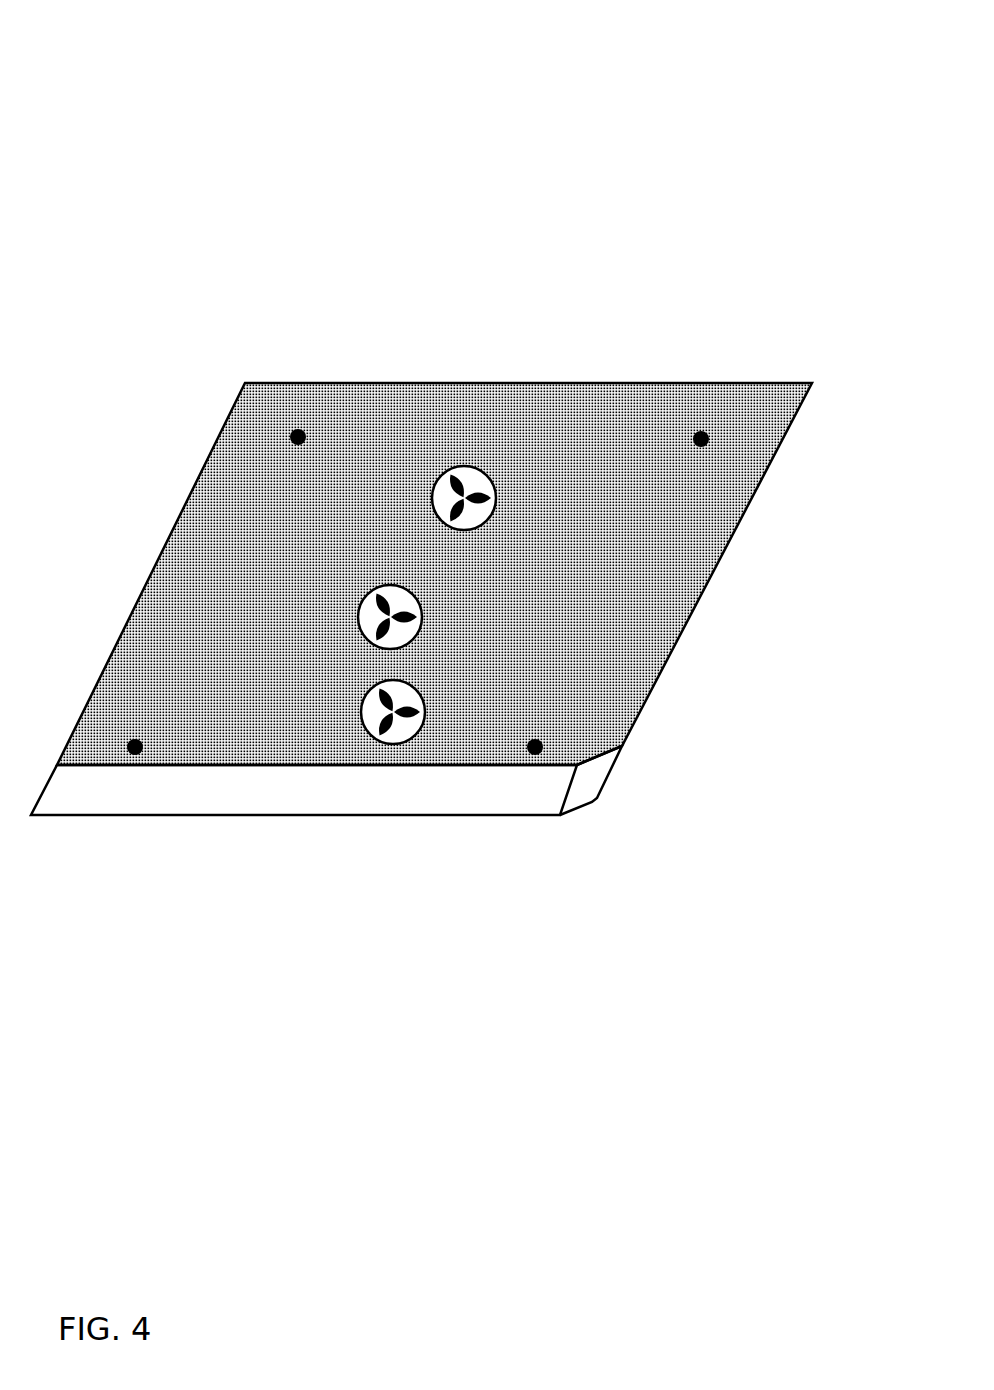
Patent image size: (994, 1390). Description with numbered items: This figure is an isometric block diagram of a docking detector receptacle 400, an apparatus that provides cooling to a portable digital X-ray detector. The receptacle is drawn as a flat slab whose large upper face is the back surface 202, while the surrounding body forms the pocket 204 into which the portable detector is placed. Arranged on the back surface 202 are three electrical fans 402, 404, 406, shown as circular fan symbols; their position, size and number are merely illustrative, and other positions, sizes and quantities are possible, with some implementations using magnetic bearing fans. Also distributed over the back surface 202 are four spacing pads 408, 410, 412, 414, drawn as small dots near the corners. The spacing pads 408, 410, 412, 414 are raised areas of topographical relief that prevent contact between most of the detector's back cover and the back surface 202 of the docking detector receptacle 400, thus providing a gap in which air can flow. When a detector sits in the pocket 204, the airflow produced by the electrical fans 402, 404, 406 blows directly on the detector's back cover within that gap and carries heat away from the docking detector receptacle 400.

The docking detector receptacle 400 is at (440, 451).
The back surface 202 is at (386, 383).
The pocket 204 is at (337, 815).
The electrical fan 402 is at (463, 466).
The electrical fan 404 is at (422, 622).
The electrical fan 406 is at (362, 700).
The spacing pad 408 is at (299, 445).
The spacing pad 410 is at (143, 748).
The spacing pad 412 is at (692, 441).
The spacing pad 414 is at (535, 739).